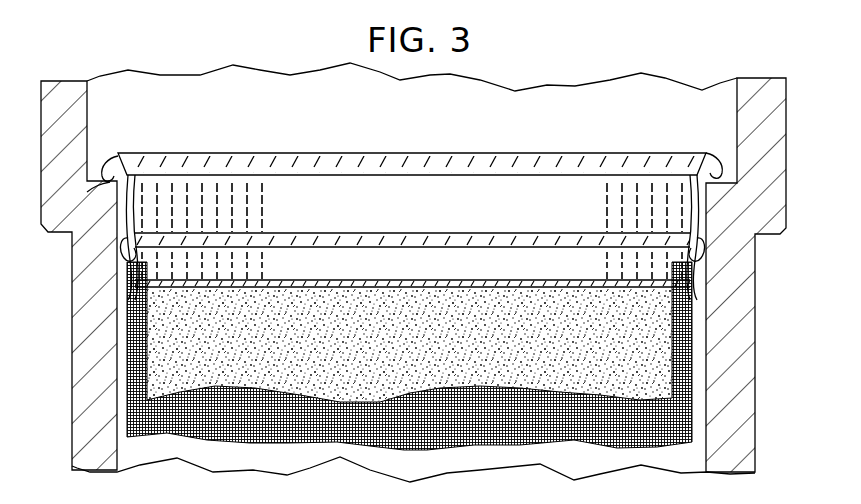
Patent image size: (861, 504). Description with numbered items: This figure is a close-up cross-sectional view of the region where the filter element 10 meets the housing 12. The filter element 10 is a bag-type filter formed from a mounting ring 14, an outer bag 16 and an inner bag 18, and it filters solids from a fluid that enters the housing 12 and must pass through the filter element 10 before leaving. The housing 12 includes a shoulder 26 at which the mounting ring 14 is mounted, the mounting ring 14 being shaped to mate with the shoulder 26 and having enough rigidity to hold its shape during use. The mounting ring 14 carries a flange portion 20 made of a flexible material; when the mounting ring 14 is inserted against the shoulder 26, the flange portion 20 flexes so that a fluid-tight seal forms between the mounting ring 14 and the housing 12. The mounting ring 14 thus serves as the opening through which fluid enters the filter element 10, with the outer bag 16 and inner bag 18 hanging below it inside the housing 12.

The filter element 10 is at (377, 133).
The housing 12 is at (802, 74).
The mounting ring 14 is at (143, 157).
The outer bag 16 is at (697, 369).
The inner bag 18 is at (700, 331).
The flange portion 20 is at (112, 168).
The shoulder 26 is at (100, 188).